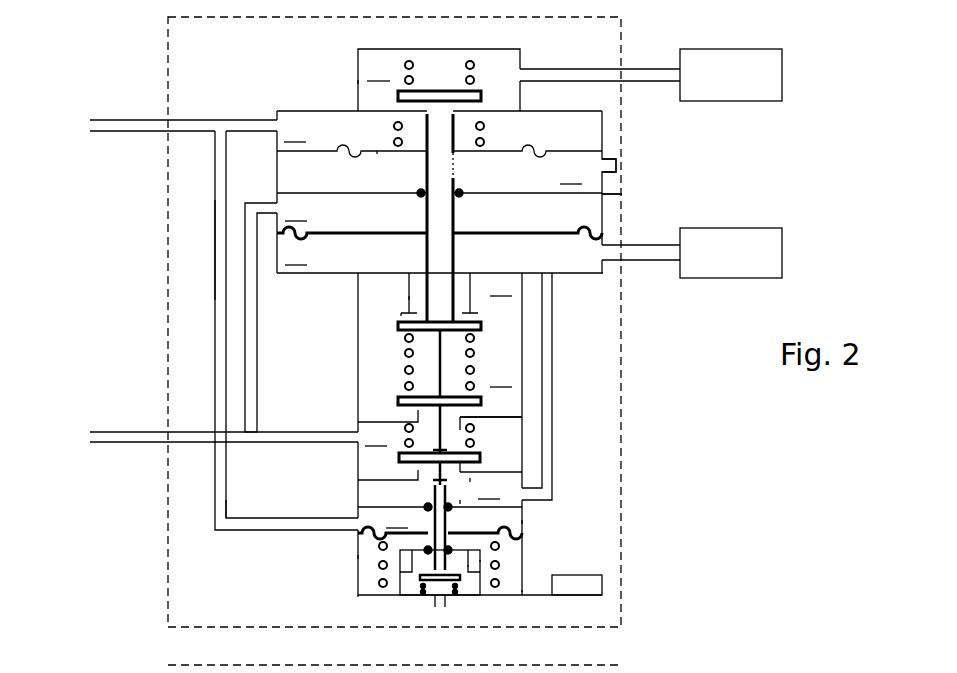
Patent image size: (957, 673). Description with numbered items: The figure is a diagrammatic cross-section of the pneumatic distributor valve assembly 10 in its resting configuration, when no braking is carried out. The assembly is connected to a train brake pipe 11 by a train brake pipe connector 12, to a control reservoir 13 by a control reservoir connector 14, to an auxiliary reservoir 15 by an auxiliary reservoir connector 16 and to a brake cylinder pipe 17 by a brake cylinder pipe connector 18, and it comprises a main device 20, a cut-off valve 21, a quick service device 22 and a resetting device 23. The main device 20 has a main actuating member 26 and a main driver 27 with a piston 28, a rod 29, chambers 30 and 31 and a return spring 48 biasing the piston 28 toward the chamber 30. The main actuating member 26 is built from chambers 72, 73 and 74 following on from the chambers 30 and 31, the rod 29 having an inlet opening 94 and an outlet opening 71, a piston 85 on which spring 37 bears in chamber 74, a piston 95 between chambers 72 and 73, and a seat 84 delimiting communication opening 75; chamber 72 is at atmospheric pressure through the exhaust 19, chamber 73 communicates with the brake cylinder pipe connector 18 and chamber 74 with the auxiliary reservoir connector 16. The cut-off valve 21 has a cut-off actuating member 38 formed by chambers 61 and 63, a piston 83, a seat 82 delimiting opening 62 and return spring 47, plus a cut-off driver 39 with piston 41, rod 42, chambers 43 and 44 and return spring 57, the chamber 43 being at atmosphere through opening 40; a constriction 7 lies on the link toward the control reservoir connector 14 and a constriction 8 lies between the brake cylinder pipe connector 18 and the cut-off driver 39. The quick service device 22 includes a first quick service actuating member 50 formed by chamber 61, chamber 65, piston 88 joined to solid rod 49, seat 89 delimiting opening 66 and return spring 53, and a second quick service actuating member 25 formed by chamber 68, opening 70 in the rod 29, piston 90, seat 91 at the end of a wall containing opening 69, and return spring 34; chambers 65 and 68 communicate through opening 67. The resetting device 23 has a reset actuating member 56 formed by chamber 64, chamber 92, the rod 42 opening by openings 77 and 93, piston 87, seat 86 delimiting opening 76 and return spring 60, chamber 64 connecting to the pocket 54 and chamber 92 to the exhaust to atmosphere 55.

The constriction 7 is at (553, 286).
The constriction 8 is at (216, 134).
The pneumatic distributor valve assembly 10 is at (168, 298).
The train brake pipe 11 is at (86, 441).
The train brake pipe connector 12 is at (166, 442).
The control reservoir 13 is at (782, 253).
The control reservoir connector 14 is at (620, 264).
The auxiliary reservoir 15 is at (782, 75).
The auxiliary reservoir connector 16 is at (620, 82).
The brake cylinder pipe 17 is at (86, 128).
The brake cylinder pipe connector 18 is at (164, 130).
The exhaust to atmosphere 19 is at (618, 167).
The main device 20 is at (618, 197).
The cut-off valve 21 is at (341, 494).
The quick service device 22 is at (375, 373).
The resetting device 23 is at (328, 560).
The second quick service actuating member 25 is at (498, 317).
The main actuating member 26 is at (355, 85).
The main driver 27 is at (605, 235).
The piston 28 is at (495, 232).
The rod 29 is at (425, 213).
The chamber 30 is at (440, 258).
The chamber 31 is at (277, 316).
The return spring 34 is at (478, 332).
The spring 37 is at (474, 63).
The cut-off actuating member 38 is at (395, 446).
The cut-off driver 39 is at (476, 515).
The opening to atmosphere 40 is at (353, 596).
The piston 41 is at (494, 525).
The rod 42 is at (504, 536).
The chamber 43 is at (525, 592).
The chamber 44 is at (440, 516).
The return spring 47 is at (464, 463).
The return spring 48 is at (394, 128).
The solid rod 49 is at (471, 447).
The first quick service actuating member 50 is at (395, 402).
The return spring 53 is at (398, 382).
The pocket 54 is at (602, 583).
The exhaust to atmosphere 55 is at (437, 585).
The reset actuating member 56 is at (415, 588).
The return spring 57 is at (379, 565).
The return spring 60 is at (440, 615).
The chamber 61 is at (389, 435).
The opening for fluidic communication 62 is at (466, 500).
The chamber 63 is at (491, 481).
The chamber 64 is at (378, 555).
The chamber 65 is at (440, 398).
The communication opening 66 is at (383, 450).
The communication opening 67 is at (378, 357).
The chamber 68 is at (457, 293).
The communication opening 69 is at (405, 300).
The opening 70 is at (466, 300).
The outlet opening 71 is at (456, 167).
The chamber 72 is at (591, 192).
The chamber 73 is at (439, 192).
The chamber 74 is at (439, 80).
The communication opening 75 is at (418, 112).
The communication opening 76 is at (486, 565).
The opening 77 is at (431, 487).
The seat 82 is at (474, 483).
The piston 83 is at (463, 470).
The seat 84 is at (454, 112).
The piston 85 is at (454, 91).
The seat 86 is at (470, 570).
The piston 87 is at (435, 590).
The piston 88 is at (474, 412).
The seat 89 is at (474, 429).
The piston 90 is at (476, 352).
The seat 91 is at (410, 322).
The chamber 92 is at (463, 585).
The opening 93 is at (403, 573).
The inlet opening 94 is at (462, 126).
The piston 95 is at (378, 153).